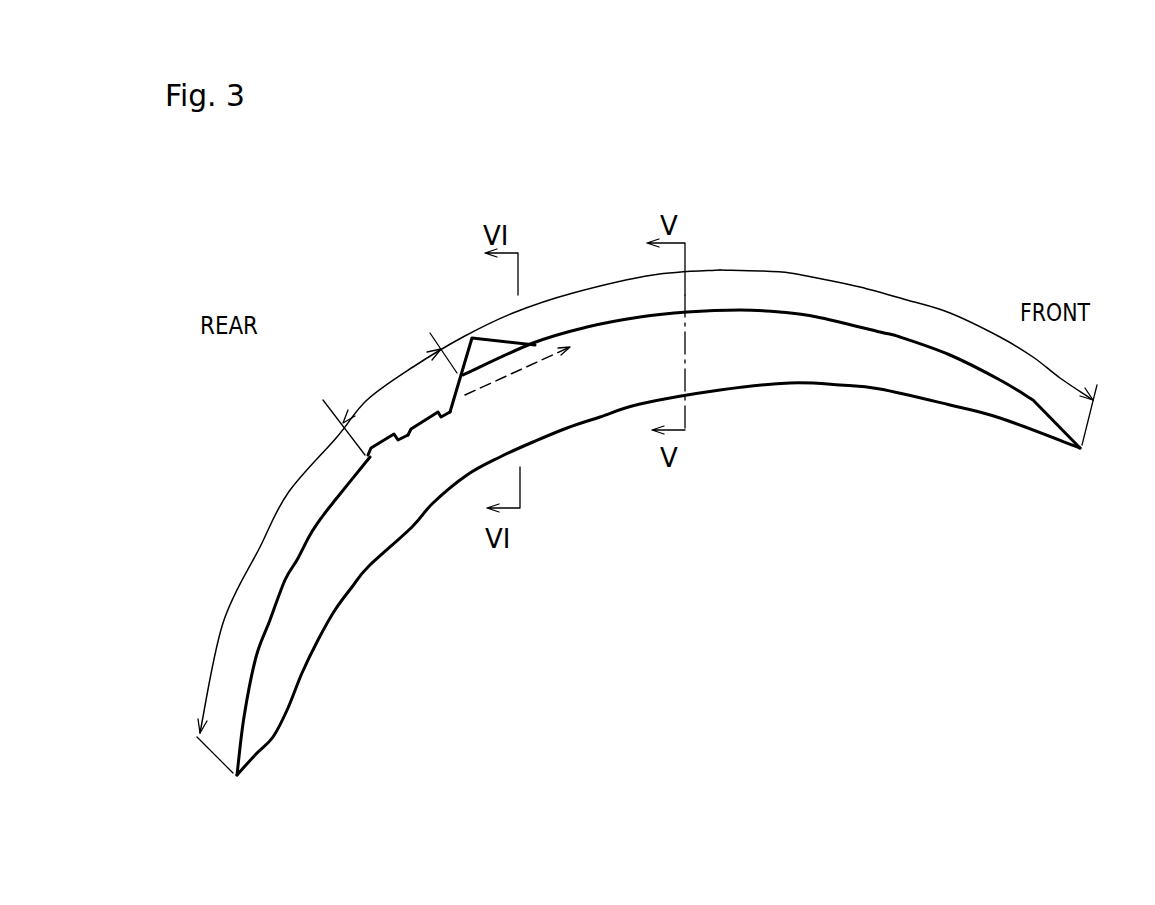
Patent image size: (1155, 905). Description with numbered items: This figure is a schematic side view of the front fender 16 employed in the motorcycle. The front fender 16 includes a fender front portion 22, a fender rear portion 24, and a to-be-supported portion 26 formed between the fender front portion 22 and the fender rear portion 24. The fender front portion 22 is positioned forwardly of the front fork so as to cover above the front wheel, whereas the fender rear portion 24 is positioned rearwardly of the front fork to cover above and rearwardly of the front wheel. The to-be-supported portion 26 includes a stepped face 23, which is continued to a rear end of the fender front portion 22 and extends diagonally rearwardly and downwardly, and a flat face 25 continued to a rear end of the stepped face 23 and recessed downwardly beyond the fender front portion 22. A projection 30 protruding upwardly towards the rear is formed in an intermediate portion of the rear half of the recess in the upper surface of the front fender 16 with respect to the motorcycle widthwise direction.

The front fender 16 is at (576, 283).
The fender front portion 22 is at (816, 278).
The stepped face 23 is at (403, 433).
The fender rear portion 24 is at (288, 495).
The flat face 25 is at (407, 433).
The to-be-supported portion 26 is at (367, 403).
The projection 30 is at (478, 352).